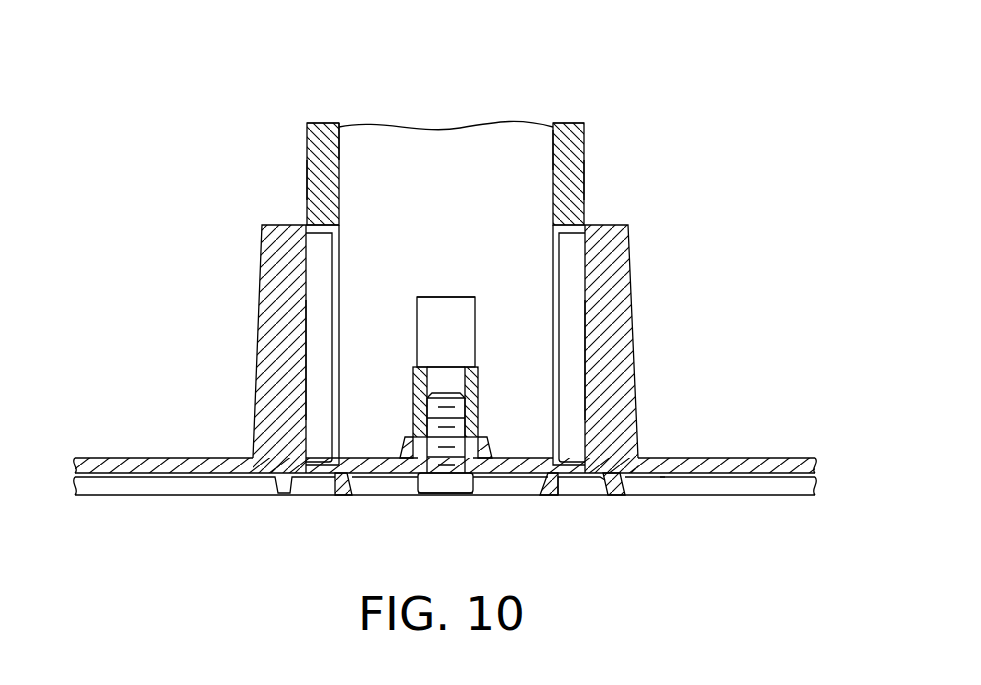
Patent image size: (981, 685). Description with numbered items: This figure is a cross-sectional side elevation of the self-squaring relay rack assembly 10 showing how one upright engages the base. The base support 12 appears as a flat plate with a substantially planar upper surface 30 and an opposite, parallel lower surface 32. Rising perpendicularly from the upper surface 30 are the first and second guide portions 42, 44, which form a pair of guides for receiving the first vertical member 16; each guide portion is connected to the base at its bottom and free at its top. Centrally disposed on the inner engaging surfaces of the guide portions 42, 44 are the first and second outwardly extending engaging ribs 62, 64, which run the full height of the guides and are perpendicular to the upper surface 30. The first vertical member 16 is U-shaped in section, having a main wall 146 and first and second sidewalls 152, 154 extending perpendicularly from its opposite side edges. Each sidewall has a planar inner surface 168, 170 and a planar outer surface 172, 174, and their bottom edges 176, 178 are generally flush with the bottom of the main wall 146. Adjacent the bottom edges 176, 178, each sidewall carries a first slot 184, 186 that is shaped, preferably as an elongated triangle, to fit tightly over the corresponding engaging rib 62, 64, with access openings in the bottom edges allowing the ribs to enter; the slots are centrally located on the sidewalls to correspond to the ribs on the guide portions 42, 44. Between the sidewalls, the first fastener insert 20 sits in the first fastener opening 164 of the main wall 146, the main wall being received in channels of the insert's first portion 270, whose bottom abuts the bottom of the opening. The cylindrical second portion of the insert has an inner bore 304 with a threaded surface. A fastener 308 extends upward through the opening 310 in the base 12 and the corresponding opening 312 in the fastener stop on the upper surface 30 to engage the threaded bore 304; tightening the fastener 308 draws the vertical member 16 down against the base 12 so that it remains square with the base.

The self-squaring relay rack assembly 10 is at (697, 56).
The base support 12 is at (198, 508).
The first vertical member 16 is at (291, 99).
The first fastener insert 20 is at (484, 379).
The upper surface 30 is at (752, 457).
The lower surface 32 is at (665, 474).
The first guide portion 42 is at (250, 328).
The second guide portion 44 is at (646, 294).
The first engaging rib 62 is at (322, 366).
The second engaging rib 64 is at (582, 340).
The main wall 146 is at (433, 160).
The first sidewall 152 is at (296, 150).
The second sidewall 154 is at (598, 151).
The first fastener opening 164 is at (445, 310).
The inner surface of first sidewall 168 is at (340, 153).
The inner surface of second sidewall 170 is at (553, 158).
The outer surface of first sidewall 172 is at (308, 190).
The outer surface of second sidewall 174 is at (584, 190).
The bottom edge of first sidewall 176 is at (352, 446).
The bottom edge of second sidewall 178 is at (560, 432).
The first slot of first sidewall 184 is at (322, 231).
The first slot of second sidewall 186 is at (566, 232).
The first portion 270 is at (462, 298).
The inner bore 304 is at (433, 386).
The fastener 308 is at (443, 492).
The opening in base 310 is at (447, 494).
The opening in fastener stop 312 is at (482, 456).